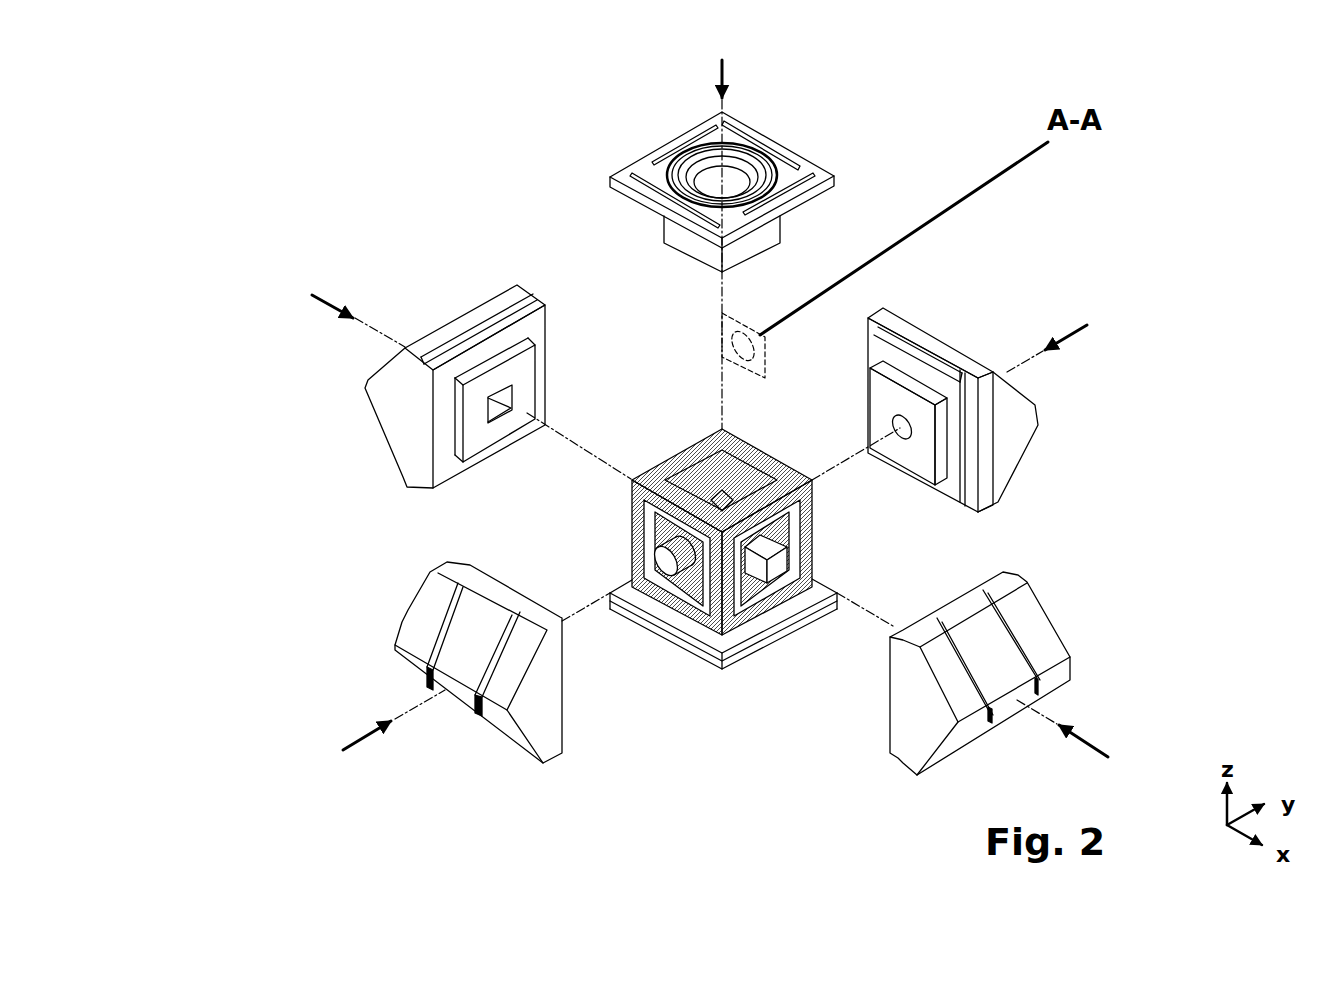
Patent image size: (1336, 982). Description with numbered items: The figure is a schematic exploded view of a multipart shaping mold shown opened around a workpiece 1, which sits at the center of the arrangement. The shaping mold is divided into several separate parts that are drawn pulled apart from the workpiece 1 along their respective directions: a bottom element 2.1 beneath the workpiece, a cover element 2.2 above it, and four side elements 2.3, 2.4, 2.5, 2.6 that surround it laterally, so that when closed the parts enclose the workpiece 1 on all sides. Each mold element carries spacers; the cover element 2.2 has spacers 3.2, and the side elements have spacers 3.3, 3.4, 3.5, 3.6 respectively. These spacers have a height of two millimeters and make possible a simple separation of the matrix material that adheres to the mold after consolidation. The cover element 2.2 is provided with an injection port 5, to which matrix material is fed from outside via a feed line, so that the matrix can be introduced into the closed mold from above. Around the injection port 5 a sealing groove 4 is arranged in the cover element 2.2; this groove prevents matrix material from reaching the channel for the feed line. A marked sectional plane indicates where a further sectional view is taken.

The workpiece 1 is at (753, 570).
The bottom element 2.1 is at (687, 633).
The cover element 2.2 is at (645, 165).
The side element 2.3 is at (1025, 595).
The side element 2.4 is at (1008, 443).
The side element 2.5 is at (405, 427).
The side element 2.6 is at (437, 593).
The spacer 3.2 is at (790, 189).
The spacer 3.3 is at (970, 665).
The spacer 3.4 is at (908, 332).
The spacer 3.5 is at (498, 312).
The spacer 3.6 is at (493, 648).
The sealing groove 4 is at (710, 147).
The injection port 5 is at (712, 188).